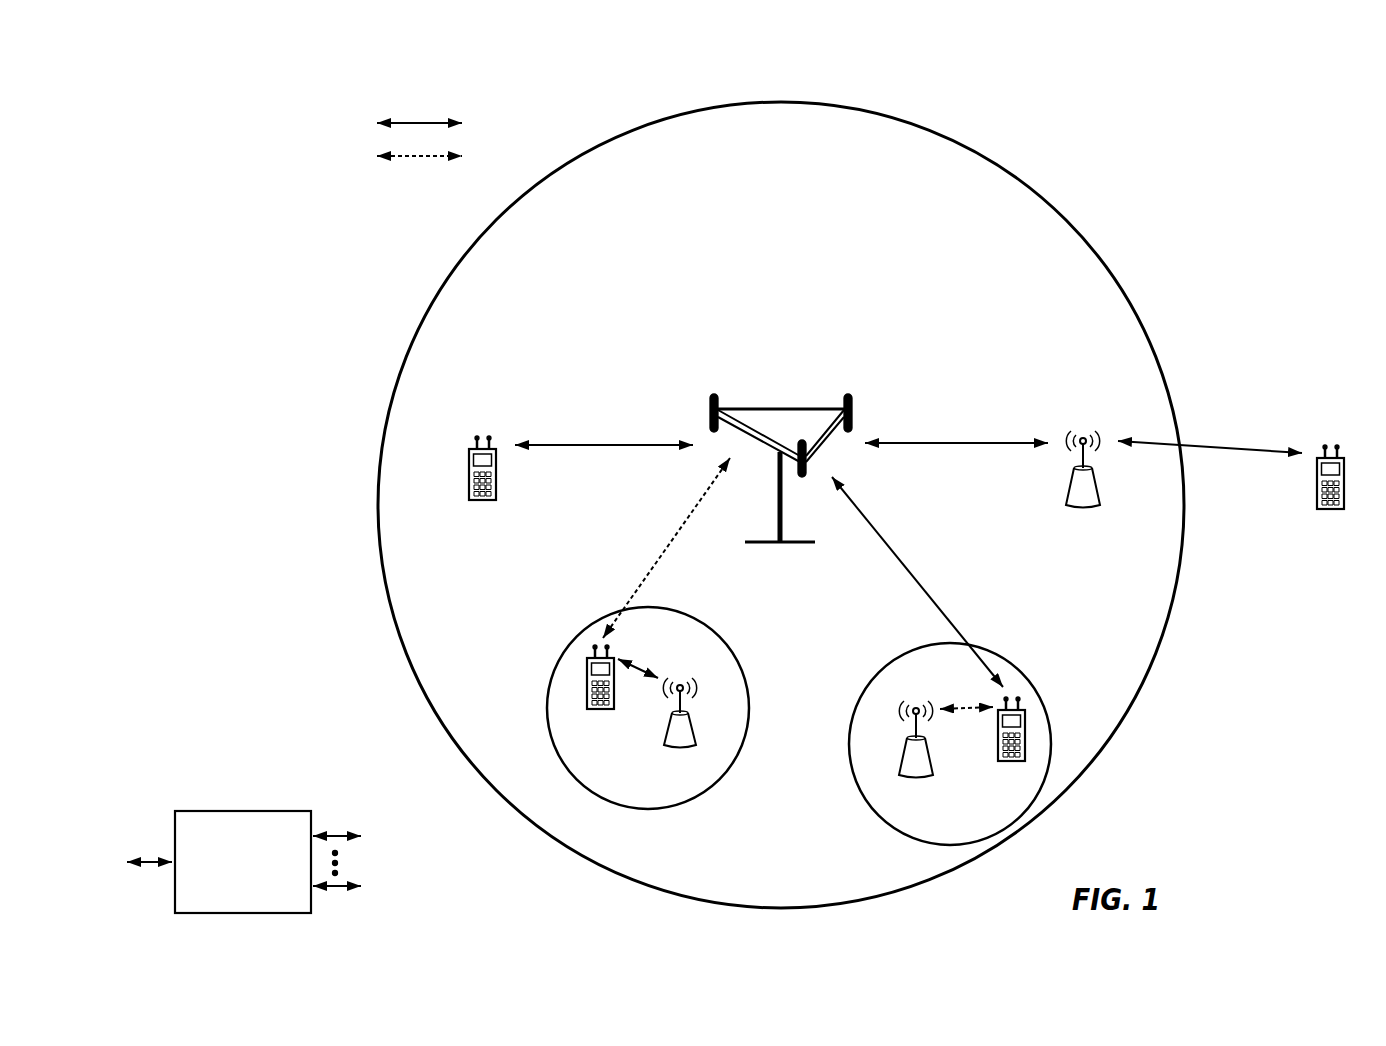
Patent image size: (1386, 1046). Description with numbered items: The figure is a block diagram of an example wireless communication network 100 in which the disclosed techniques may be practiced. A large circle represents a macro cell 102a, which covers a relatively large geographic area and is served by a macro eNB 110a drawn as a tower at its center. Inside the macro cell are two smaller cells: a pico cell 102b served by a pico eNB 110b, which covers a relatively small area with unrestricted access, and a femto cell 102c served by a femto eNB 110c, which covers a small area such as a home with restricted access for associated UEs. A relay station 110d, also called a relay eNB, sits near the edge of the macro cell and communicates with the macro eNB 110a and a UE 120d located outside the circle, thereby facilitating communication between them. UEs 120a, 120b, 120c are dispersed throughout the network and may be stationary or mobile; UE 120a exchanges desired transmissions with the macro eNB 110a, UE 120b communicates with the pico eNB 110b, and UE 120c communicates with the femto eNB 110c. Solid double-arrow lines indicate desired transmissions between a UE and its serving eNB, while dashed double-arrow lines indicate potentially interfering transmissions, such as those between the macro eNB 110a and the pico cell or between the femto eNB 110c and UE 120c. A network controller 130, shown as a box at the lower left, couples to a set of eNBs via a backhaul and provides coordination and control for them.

The wireless communication network 100 is at (1256, 170).
The macro cell 102a is at (1049, 208).
The pico cell 102b is at (734, 628).
The femto cell 102c is at (872, 677).
The macro eNB 110a is at (782, 408).
The pico eNB 110b is at (696, 736).
The femto eNB 110c is at (899, 760).
The relay station 110d is at (1084, 436).
The UE 120a is at (468, 459).
The UE 120b is at (587, 703).
The UE 120c is at (999, 752).
The UE 120d is at (1345, 470).
The network controller 130 is at (240, 811).